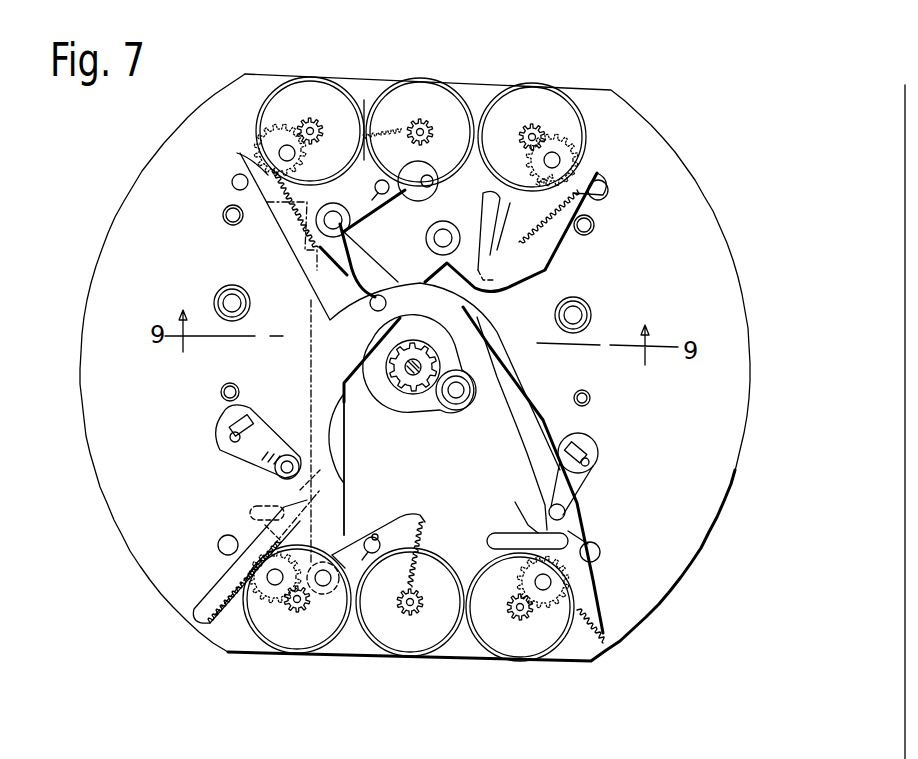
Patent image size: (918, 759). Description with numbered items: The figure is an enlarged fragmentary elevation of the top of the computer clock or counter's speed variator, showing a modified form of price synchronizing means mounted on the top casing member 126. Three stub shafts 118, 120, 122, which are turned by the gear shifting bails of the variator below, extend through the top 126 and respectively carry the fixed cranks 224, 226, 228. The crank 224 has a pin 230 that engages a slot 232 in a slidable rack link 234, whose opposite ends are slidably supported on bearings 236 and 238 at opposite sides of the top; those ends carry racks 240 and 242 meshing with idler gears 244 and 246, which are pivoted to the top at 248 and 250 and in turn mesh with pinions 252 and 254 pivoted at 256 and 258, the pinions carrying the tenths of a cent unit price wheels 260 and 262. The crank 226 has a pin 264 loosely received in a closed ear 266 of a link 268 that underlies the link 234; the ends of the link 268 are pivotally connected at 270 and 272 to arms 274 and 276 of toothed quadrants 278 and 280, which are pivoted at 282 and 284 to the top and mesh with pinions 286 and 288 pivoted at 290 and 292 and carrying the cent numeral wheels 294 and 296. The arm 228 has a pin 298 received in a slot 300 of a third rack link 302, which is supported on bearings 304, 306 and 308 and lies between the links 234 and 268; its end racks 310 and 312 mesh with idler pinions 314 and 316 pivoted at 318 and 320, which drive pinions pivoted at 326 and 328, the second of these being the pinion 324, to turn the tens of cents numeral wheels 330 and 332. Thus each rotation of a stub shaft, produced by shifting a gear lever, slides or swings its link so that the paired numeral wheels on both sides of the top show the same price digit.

The stub shaft 118 is at (588, 447).
The stub shaft 120 is at (240, 428).
The stub shaft 122 is at (441, 198).
The top casing member 126 is at (690, 212).
The crank 224 is at (598, 460).
The crank 226 is at (240, 450).
The crank 228 is at (440, 212).
The pin 230 is at (566, 508).
The slot 232 is at (528, 525).
The slidable rack link 234 is at (530, 402).
The bearing 236 is at (497, 535).
The bearing 238 is at (267, 208).
The rack 240 is at (565, 606).
The rack 242 is at (240, 153).
The idler gear 244 is at (587, 588).
The idler gear 246 is at (268, 123).
The pivot 248 is at (600, 568).
The pivot 250 is at (290, 150).
The pinion 252 is at (570, 662).
The pinion 254 is at (302, 123).
The pivot 256 is at (522, 620).
The pivot 258 is at (316, 120).
The tenths of a cent unit price wheel 260 is at (512, 655).
The tenths of a cent unit price wheel 262 is at (337, 80).
The pin 264 is at (280, 468).
The closed ear 266 is at (292, 455).
The link 268 is at (342, 413).
The pivot connection 270 is at (325, 585).
The pivot connection 272 is at (348, 236).
The arm 274 is at (354, 540).
The arm 276 is at (386, 202).
The toothed quadrant 278 is at (386, 580).
The toothed quadrant 280 is at (364, 100).
The pivot 282 is at (376, 538).
The pivot 284 is at (386, 178).
The pinion 286 is at (445, 645).
The pinion 288 is at (385, 292).
The pivot 290 is at (416, 595).
The pivot 292 is at (432, 135).
The cent numeral wheel 294 is at (423, 520).
The cent numeral wheel 296 is at (434, 120).
The pin 298 is at (473, 292).
The slot 300 is at (530, 240).
The rack link 302 is at (523, 270).
The bearing 304 is at (545, 206).
The bearing 306 is at (395, 324).
The bearing 308 is at (250, 510).
The rack 310 is at (567, 192).
The rack 312 is at (233, 597).
The idler pinion 314 is at (582, 132).
The idler pinion 316 is at (208, 643).
The pivot 318 is at (550, 160).
The pivot 320 is at (274, 580).
The pinion 324 is at (278, 590).
The pivot 326 is at (532, 136).
The pivot 328 is at (296, 612).
The tens of cents numeral wheel 330 is at (558, 85).
The tens of cents numeral wheel 332 is at (556, 128).